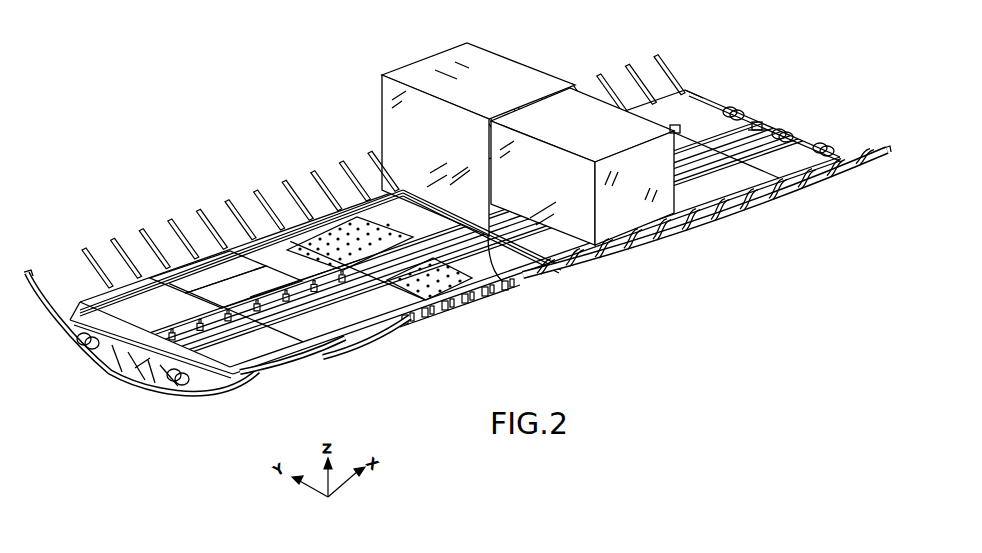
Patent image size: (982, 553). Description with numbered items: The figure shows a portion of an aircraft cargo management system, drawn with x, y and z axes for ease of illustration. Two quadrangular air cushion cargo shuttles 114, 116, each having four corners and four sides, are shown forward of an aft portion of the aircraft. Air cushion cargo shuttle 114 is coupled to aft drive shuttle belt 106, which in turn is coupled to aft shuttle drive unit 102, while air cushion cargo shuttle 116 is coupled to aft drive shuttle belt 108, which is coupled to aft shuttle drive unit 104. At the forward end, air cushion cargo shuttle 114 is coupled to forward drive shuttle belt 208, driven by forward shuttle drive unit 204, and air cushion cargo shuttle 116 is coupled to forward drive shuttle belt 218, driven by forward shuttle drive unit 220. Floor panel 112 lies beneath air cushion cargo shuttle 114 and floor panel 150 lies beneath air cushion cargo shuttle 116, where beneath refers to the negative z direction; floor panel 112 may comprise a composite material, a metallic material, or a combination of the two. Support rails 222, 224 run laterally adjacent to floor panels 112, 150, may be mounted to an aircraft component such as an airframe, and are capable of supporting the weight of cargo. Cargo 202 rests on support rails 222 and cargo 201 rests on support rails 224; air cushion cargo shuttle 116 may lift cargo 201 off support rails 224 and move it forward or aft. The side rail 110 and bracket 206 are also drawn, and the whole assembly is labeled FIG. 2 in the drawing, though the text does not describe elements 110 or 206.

The aft shuttle drive unit 102 is at (180, 388).
The aft shuttle drive unit 104 is at (90, 350).
The aft drive shuttle belt 106 is at (363, 340).
The aft drive shuttle belt 108 is at (237, 283).
The side rail 110 is at (558, 275).
The floor panel 112 is at (307, 343).
The air cushion cargo shuttle 114 is at (443, 295).
The air cushion cargo shuttle 116 is at (357, 245).
The floor panel 150 is at (225, 275).
The cargo 201 is at (427, 78).
The cargo 202 is at (588, 120).
The forward shuttle drive unit 204 is at (823, 150).
The bracket 206 is at (757, 128).
The forward drive shuttle belt 208 is at (690, 193).
The forward drive shuttle belt 218 is at (677, 130).
The forward shuttle drive unit 220 is at (733, 108).
The support rails 222 is at (520, 278).
The support rails 224 is at (300, 288).